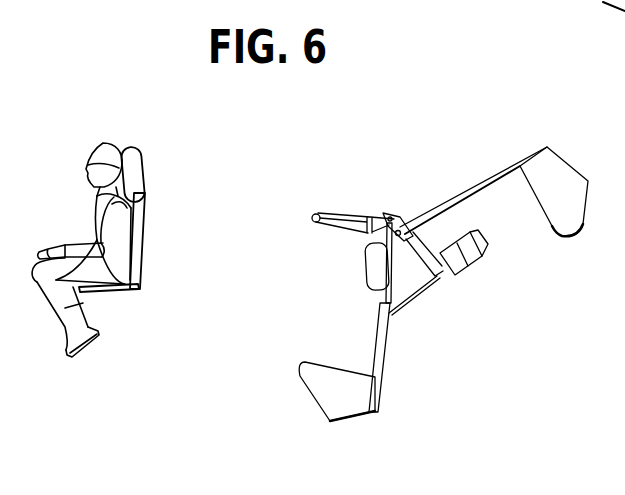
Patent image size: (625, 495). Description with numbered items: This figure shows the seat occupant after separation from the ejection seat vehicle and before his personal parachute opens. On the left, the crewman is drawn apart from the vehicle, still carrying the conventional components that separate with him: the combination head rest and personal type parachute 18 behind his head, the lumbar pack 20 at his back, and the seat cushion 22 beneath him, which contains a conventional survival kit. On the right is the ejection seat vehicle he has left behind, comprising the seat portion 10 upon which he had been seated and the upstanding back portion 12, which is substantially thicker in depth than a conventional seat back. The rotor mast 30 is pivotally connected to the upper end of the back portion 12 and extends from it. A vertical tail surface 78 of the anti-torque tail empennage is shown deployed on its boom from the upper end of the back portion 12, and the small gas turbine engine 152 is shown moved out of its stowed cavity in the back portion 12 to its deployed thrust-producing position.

The seat portion 10 is at (350, 408).
The back portion 12 is at (383, 345).
The combination head rest and personal type parachute 18 is at (142, 172).
The lumbar pack 20 is at (141, 243).
The seat cushion 22 is at (94, 292).
The rotor mast 30 is at (347, 225).
The vertical tail surface 78 is at (575, 203).
The gas turbine engine 152 is at (470, 268).